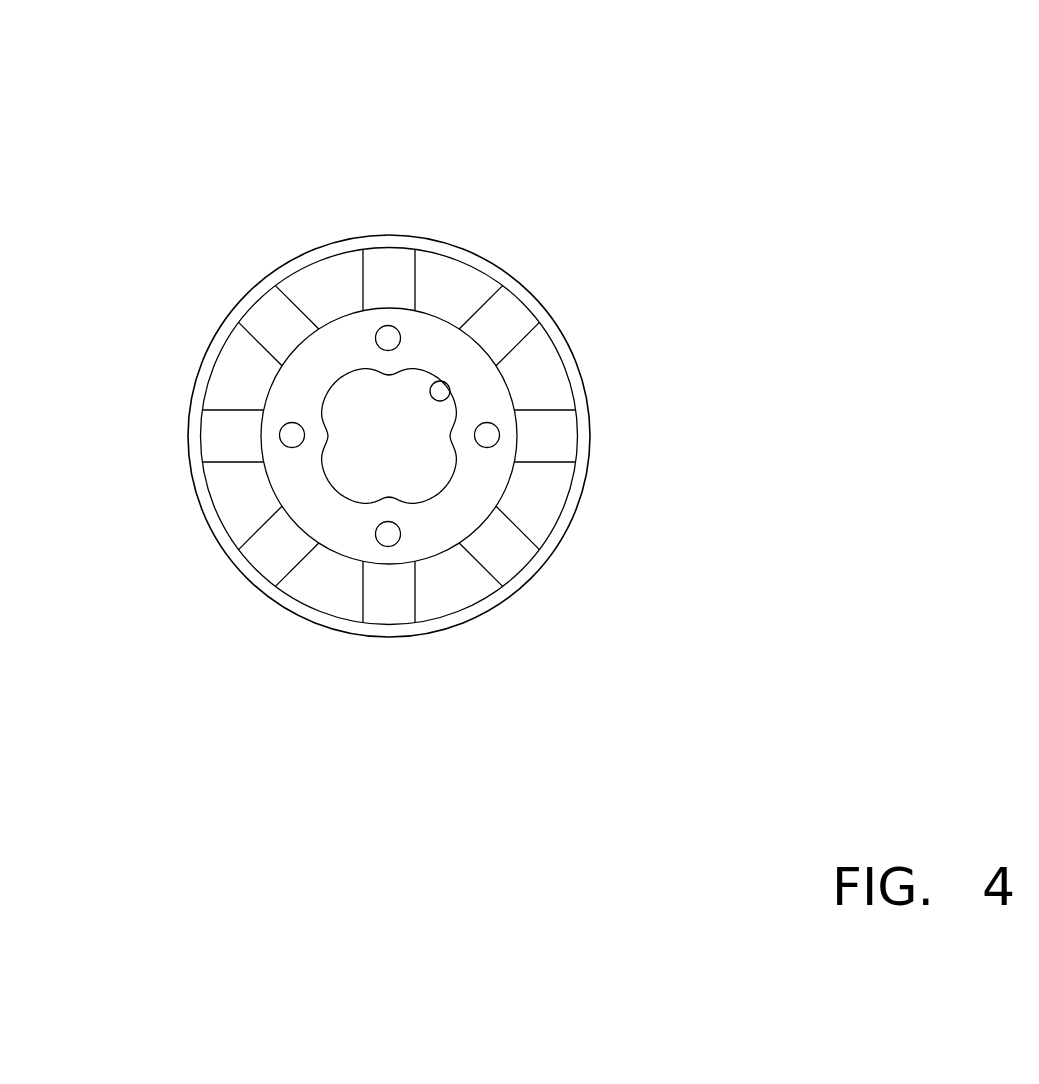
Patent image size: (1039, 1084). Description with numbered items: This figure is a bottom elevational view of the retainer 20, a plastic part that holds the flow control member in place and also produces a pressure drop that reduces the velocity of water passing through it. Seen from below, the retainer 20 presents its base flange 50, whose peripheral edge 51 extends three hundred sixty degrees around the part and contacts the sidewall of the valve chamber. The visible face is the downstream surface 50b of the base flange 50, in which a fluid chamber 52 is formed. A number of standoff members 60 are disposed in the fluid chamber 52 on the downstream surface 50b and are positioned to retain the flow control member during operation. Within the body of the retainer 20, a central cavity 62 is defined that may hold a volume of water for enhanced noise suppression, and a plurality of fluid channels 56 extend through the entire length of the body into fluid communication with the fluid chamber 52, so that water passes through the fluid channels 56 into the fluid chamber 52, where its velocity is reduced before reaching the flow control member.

The retainer 20 is at (660, 181).
The base flange 50 is at (547, 487).
The downstream surface 50b is at (235, 507).
The peripheral edge 51 is at (245, 293).
The fluid chamber 52 is at (235, 373).
The fluid channels 56 is at (388, 539).
The standoff members 60 is at (503, 558).
The central cavity 62 is at (450, 393).